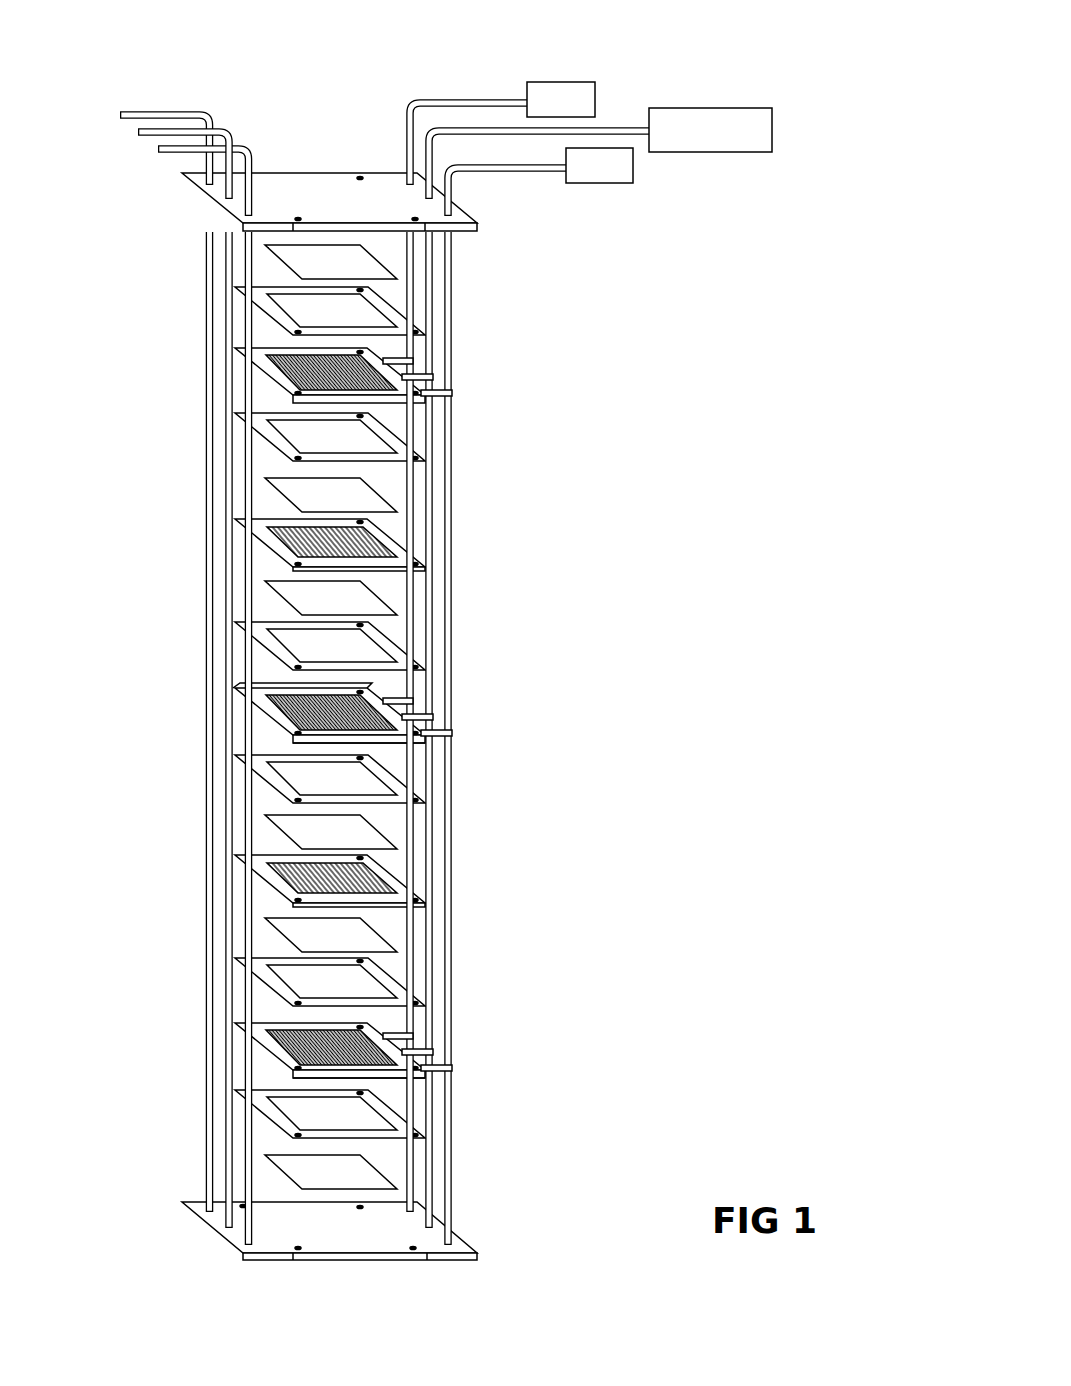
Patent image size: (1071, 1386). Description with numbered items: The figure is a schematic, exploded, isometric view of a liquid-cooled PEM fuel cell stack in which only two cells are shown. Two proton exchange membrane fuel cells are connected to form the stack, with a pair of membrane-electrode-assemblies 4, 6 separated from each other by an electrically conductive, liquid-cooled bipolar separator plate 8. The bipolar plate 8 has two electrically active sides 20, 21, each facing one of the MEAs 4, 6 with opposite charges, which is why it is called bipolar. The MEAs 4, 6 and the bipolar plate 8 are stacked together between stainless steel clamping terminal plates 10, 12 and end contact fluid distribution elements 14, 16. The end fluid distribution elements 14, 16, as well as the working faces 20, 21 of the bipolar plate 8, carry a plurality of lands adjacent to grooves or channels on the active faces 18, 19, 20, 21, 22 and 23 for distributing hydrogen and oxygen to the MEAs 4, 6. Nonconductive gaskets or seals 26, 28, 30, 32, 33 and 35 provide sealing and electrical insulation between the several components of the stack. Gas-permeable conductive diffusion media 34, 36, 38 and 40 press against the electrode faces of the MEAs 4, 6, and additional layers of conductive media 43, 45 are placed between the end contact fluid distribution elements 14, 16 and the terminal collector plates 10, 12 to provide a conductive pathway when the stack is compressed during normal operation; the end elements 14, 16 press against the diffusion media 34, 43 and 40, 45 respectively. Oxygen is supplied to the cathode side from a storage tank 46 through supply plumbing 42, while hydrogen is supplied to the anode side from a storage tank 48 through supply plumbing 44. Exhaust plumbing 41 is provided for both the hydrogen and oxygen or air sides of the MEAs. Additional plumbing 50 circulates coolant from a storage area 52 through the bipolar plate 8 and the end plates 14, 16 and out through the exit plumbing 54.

The membrane-electrode-assembly 4 is at (262, 546).
The membrane-electrode-assembly 6 is at (400, 872).
The bipolar separator plate 8 is at (265, 723).
The clamping terminal plate 10 is at (360, 215).
The clamping terminal plate 12 is at (367, 1245).
The end contact fluid distribution element 14 is at (260, 382).
The end contact fluid distribution element 16 is at (263, 1063).
The active face 18 is at (370, 363).
The active face 19 is at (392, 407).
The electrically active side 20 is at (237, 683).
The electrically active side 21 is at (278, 735).
The active face 22 is at (390, 1050).
The active face 23 is at (278, 1072).
The nonconductive gasket 26 is at (270, 437).
The nonconductive gasket 28 is at (270, 648).
The nonconductive gasket 30 is at (397, 780).
The nonconductive gasket 32 is at (270, 985).
The nonconductive gasket 33 is at (392, 1098).
The gas-permeable conductive diffusion medium 34 is at (272, 490).
The nonconductive gasket 35 is at (272, 316).
The gas-permeable conductive diffusion medium 36 is at (272, 592).
The gas-permeable conductive diffusion medium 38 is at (272, 822).
The gas-permeable conductive diffusion medium 40 is at (272, 925).
The exhaust plumbing 41 is at (173, 110).
The oxygen supply plumbing 42 is at (408, 128).
The conductive medium layer 43 is at (287, 256).
The hydrogen supply plumbing 44 is at (452, 187).
The conductive medium layer 45 is at (287, 1172).
The oxygen storage tank 46 is at (583, 85).
The hydrogen storage tank 48 is at (627, 183).
The coolant plumbing 50 is at (613, 127).
The coolant storage area 52 is at (690, 110).
The exit plumbing 54 is at (215, 130).